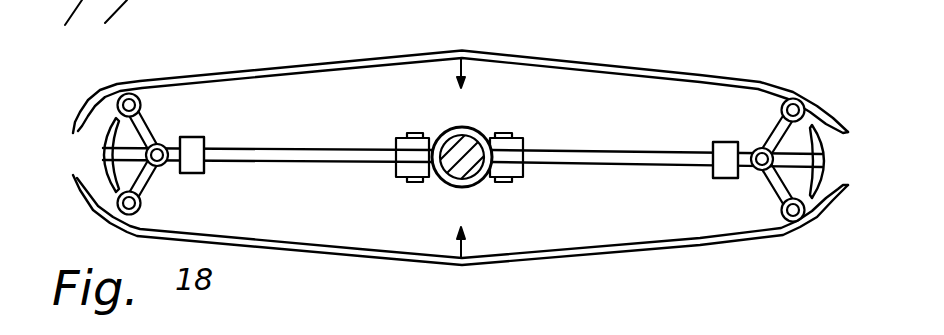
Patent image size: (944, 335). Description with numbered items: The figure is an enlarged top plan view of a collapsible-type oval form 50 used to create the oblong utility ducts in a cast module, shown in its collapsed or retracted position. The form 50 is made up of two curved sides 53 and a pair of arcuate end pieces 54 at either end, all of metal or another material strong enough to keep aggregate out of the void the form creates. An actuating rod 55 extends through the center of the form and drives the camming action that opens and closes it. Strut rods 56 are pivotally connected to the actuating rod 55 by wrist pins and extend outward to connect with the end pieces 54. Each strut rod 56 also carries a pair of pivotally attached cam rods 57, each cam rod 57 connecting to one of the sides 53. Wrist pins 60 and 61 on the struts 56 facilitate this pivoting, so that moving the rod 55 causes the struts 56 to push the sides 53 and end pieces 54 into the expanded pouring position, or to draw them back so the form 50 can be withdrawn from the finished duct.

The collapsible oval form 50 is at (554, 50).
The curved side 53 is at (645, 68).
The arcuate end piece 54 is at (100, 155).
The actuating rod 55 is at (453, 170).
The strut rod 56 is at (273, 157).
The cam rod 57 is at (147, 120).
The wrist pin 60 is at (197, 137).
The wrist pin 61 is at (418, 133).